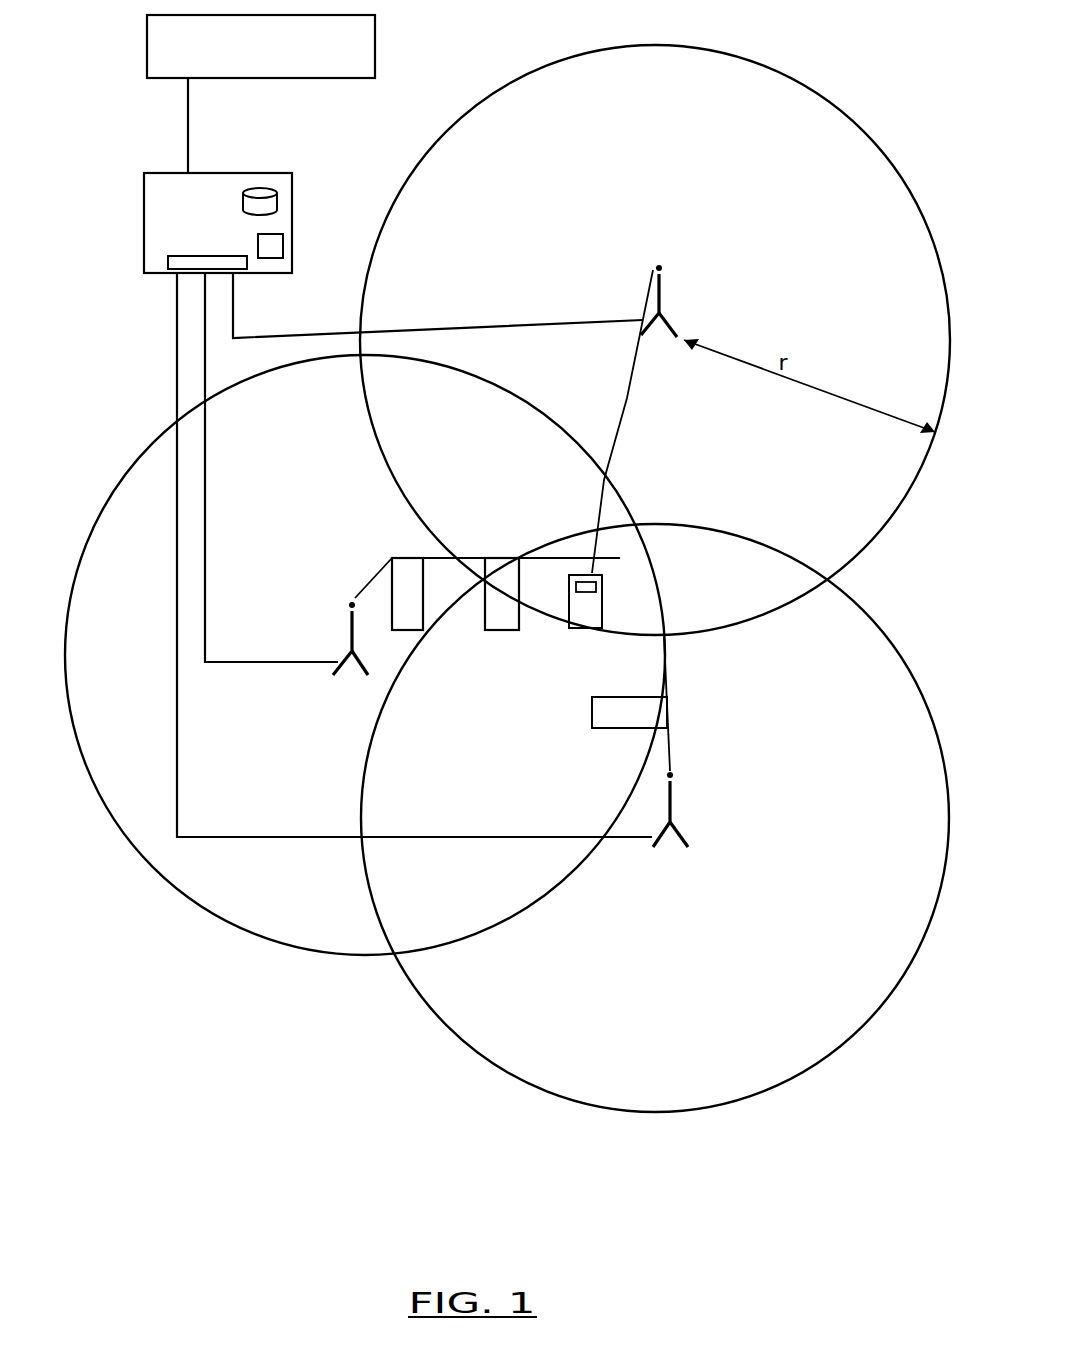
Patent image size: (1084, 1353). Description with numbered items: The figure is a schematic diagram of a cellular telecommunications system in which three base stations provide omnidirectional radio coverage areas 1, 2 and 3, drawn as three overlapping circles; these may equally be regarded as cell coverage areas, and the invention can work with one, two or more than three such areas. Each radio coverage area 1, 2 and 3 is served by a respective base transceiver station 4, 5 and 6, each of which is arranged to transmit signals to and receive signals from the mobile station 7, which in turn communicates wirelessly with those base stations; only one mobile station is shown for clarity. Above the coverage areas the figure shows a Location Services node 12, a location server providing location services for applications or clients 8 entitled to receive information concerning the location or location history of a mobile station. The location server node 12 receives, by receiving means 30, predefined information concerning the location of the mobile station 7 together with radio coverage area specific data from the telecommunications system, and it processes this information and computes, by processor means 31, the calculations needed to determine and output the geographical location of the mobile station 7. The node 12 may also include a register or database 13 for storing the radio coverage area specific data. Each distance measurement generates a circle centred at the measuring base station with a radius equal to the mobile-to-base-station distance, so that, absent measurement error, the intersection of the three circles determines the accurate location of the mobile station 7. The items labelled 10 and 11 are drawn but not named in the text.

The radio coverage area 1 is at (768, 199).
The radio coverage area 2 is at (266, 531).
The radio coverage area 3 is at (870, 774).
The base transceiver station 4 is at (660, 287).
The base transceiver station 5 is at (350, 634).
The base transceiver station 6 is at (672, 800).
The mobile station 7 is at (590, 602).
The applications or clients 8 is at (375, 38).
The measurement units 10 is at (595, 713).
The connection 11 is at (177, 352).
The location services node 12 is at (237, 187).
The register or database 13 is at (267, 208).
The receiving means 30 is at (177, 263).
The processor means 31 is at (276, 246).